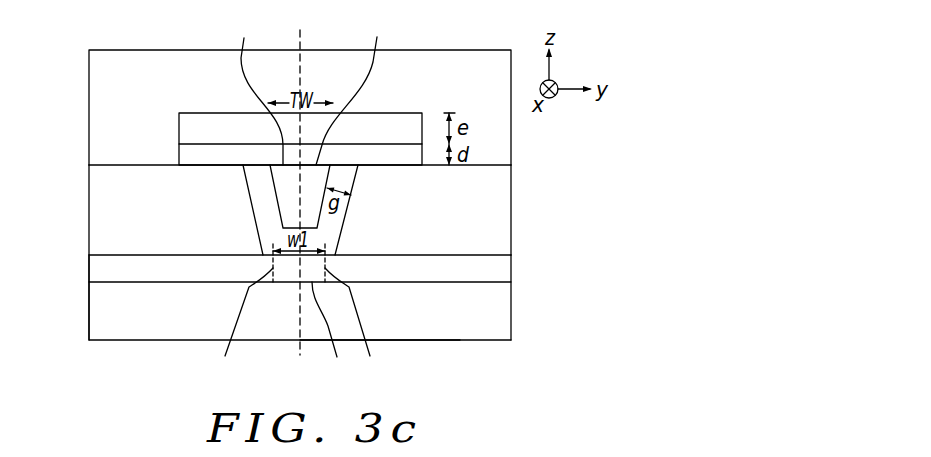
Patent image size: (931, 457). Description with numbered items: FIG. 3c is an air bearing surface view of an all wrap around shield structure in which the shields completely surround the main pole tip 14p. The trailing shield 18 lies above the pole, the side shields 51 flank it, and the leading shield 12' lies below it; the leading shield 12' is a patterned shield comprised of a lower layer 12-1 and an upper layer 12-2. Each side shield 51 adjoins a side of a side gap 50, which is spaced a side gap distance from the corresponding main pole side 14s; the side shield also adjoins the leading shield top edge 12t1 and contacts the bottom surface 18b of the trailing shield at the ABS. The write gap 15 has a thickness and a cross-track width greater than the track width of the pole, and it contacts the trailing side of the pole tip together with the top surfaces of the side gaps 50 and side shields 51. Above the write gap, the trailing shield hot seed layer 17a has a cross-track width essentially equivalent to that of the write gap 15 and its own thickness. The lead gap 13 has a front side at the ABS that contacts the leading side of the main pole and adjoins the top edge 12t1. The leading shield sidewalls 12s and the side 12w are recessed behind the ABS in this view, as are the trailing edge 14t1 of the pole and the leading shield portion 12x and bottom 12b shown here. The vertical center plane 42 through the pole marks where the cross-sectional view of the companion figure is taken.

The trailing shield 18 is at (450, 65).
The bottom surface of the trailing shield 18b is at (105, 166).
The trailing shield hot seed layer 17a is at (185, 128).
The write gap 15 is at (183, 154).
The trailing edge of main pole 14t1 is at (253, 87).
The main pole tip 14p is at (332, 122).
The main pole side 14s is at (353, 185).
The lead gap 13 is at (308, 232).
The side gap 50 is at (262, 208).
The side shields 51 is at (103, 196).
The leading shield top edge 12t1 is at (103, 255).
The upper layer of the leading shield 12-2 is at (495, 268).
The leading shield portion 12x is at (512, 310).
The bottom surface of leading shield 12b is at (106, 341).
The leading shield sidewalls 12s is at (303, 327).
The leading shield side 12w is at (335, 334).
The lower layer of the leading shield 12-1 is at (457, 331).
The leading shield 12' is at (51, 298).
The center plane 42 is at (299, 192).